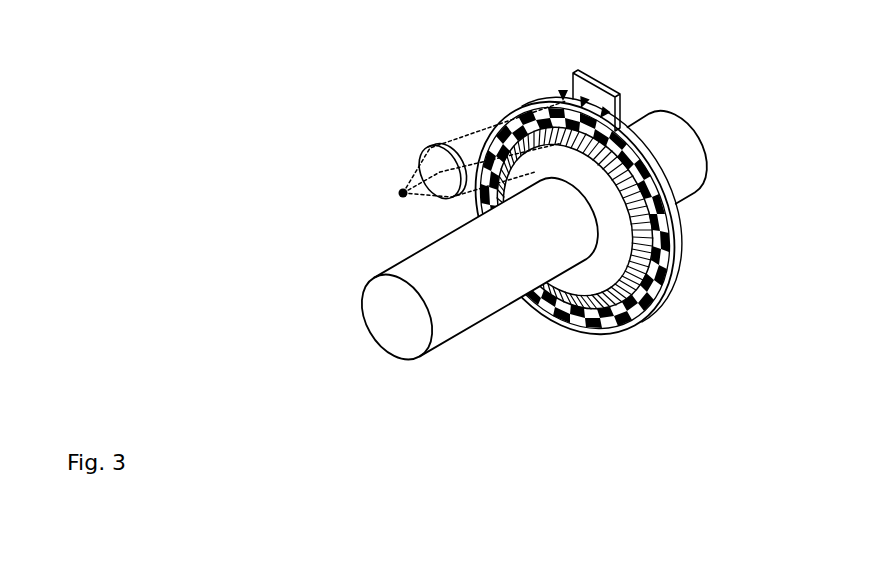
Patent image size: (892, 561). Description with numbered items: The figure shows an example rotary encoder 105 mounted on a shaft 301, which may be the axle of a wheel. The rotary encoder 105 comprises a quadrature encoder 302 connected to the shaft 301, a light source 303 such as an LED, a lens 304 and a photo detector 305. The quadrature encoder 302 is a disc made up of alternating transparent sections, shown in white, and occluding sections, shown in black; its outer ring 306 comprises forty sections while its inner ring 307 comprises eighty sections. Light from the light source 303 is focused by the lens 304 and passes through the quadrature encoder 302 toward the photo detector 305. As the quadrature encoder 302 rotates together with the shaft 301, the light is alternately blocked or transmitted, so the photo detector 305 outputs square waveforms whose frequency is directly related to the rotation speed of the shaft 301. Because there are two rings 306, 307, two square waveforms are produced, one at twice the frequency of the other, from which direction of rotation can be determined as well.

The rotary encoder 105 is at (270, 75).
The shaft 301 is at (697, 146).
The quadrature encoder 302 is at (665, 297).
The light source 303 is at (398, 193).
The lens 304 is at (430, 150).
The photo detector 305 is at (573, 74).
The outer ring 306 is at (658, 277).
The inner ring 307 is at (654, 246).